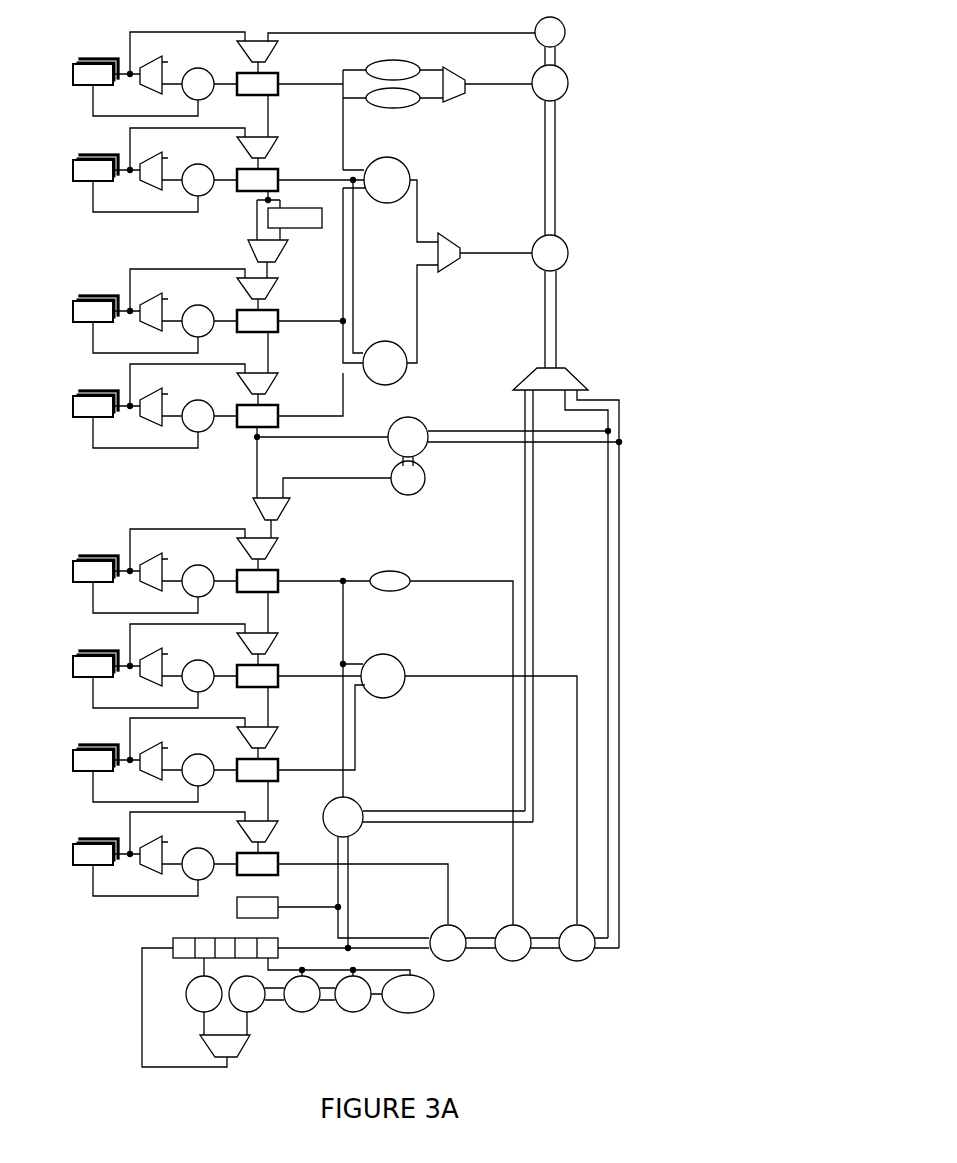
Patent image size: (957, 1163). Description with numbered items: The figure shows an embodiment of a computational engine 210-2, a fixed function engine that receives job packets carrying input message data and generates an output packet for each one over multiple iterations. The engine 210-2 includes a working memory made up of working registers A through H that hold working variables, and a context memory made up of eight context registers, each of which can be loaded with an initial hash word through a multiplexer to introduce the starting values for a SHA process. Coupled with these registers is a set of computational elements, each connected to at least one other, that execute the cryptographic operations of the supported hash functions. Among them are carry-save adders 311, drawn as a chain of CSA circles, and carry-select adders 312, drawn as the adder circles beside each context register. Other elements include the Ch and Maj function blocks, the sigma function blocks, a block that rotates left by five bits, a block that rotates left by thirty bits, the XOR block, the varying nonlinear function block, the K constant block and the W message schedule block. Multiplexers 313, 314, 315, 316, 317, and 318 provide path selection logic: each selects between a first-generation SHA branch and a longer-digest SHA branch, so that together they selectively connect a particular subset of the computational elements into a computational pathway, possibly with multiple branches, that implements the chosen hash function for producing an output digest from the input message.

The computational engine 210-2 is at (419, 555).
The carry-save adders 311 is at (462, 962).
The carry-select adders 312 is at (208, 549).
The multiplexer 313 is at (466, 89).
The multiplexer 314 is at (462, 261).
The multiplexer 315 is at (283, 256).
The multiplexer 316 is at (566, 368).
The multiplexer 317 is at (287, 511).
The multiplexer 318 is at (245, 1049).